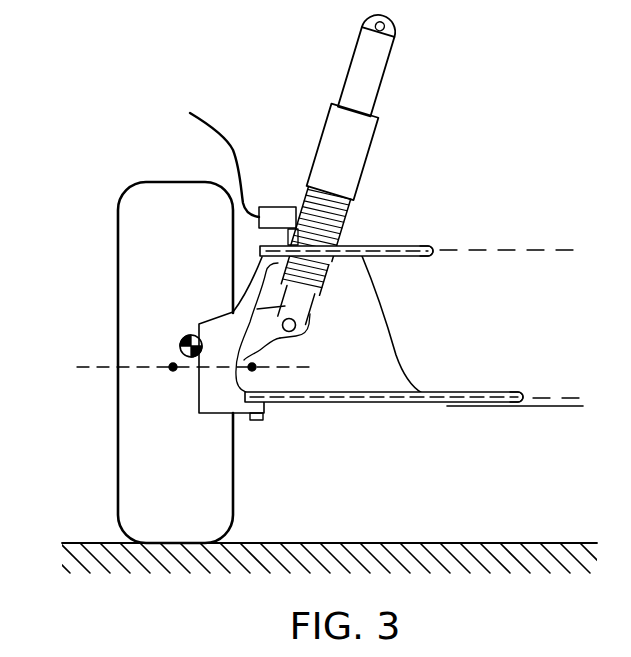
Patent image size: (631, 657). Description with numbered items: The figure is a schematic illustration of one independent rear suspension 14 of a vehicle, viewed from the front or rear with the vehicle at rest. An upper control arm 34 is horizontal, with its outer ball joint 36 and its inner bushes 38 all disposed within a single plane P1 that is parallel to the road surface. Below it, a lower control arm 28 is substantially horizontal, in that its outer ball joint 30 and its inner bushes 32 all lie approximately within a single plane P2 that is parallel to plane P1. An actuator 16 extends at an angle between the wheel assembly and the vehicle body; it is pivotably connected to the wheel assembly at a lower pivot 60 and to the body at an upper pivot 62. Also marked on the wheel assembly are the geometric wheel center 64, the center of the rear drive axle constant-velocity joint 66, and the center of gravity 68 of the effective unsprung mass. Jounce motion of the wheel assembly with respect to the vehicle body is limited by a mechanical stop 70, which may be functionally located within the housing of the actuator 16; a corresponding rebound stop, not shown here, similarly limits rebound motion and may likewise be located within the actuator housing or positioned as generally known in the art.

The independent rear suspension 14 is at (81, 175).
The actuator 16 is at (376, 143).
The upper pivot 62 is at (394, 27).
The outer ball joint 36 is at (278, 224).
The mechanical stop 70 is at (238, 190).
The upper control arm 34 is at (396, 243).
The inner bushes 38 is at (417, 257).
The plane P1 is at (518, 249).
The lower pivot 60 is at (298, 322).
The center of the rear drive axle CV joint 66 is at (276, 347).
The geometric wheel center 64 is at (173, 370).
The center of gravity of the effective unsprung mass 68 is at (180, 345).
The lower control arm 28 is at (365, 404).
The inner bushes 32 is at (513, 402).
The plane P2 is at (547, 397).
The outer ball joint 30 is at (258, 421).